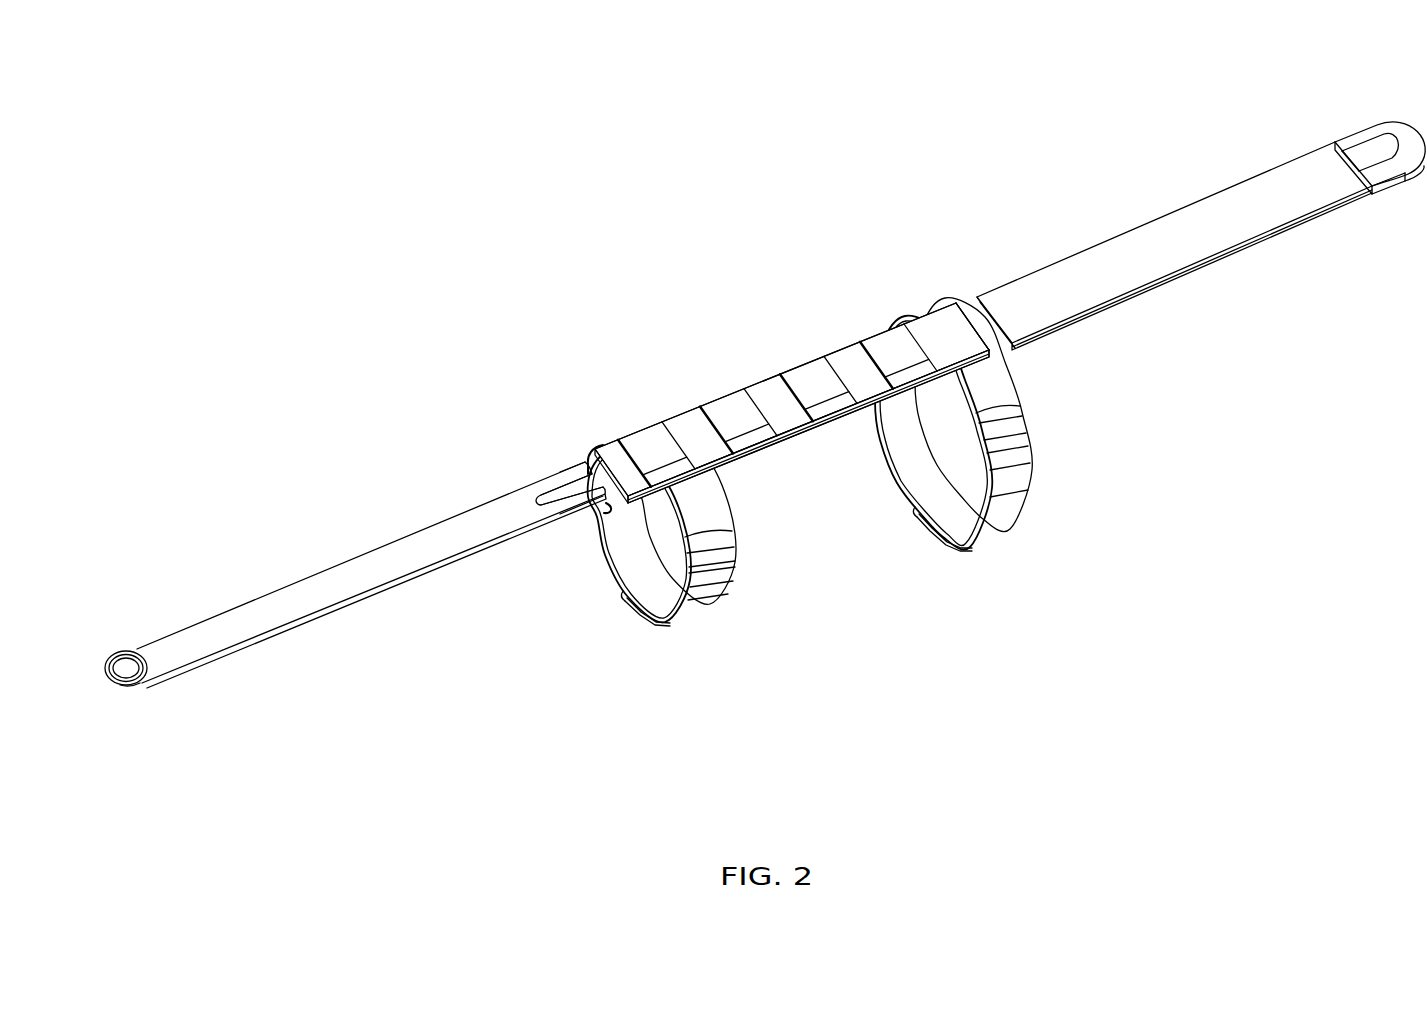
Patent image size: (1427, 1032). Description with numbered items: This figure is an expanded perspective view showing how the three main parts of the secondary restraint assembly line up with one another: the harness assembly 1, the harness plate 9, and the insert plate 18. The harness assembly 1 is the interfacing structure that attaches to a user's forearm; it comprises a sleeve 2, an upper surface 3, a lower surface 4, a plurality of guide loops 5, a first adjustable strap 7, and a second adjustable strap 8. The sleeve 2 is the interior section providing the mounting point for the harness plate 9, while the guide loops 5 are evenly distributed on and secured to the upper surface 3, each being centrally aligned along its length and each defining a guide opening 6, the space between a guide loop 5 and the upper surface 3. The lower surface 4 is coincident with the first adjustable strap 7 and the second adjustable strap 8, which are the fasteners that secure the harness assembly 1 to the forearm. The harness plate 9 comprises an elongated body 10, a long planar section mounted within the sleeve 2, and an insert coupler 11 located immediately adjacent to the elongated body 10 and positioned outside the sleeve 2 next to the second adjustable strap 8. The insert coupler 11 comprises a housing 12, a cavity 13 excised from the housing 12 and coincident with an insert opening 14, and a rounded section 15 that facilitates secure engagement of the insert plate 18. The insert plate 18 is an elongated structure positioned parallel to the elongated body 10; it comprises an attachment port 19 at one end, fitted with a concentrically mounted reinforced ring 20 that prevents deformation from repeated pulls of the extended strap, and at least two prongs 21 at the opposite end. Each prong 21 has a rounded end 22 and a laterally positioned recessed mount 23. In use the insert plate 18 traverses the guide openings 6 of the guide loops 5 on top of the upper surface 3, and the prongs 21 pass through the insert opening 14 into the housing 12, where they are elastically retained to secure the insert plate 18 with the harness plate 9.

The harness assembly 1 is at (782, 369).
The sleeve 2 is at (965, 286).
The upper surface 3 is at (775, 383).
The lower surface 4 is at (818, 420).
The guide loop 5 is at (645, 437).
The guide opening 6 is at (635, 462).
The first adjustable strap 7 is at (720, 595).
The second adjustable strap 8 is at (1032, 515).
The harness plate 9 is at (1202, 202).
The elongated body 10 is at (1092, 248).
The insert coupler 11 is at (1361, 150).
The housing 12 is at (1375, 195).
The cavity 13 is at (1384, 140).
The insert opening 14 is at (1340, 174).
The rounded section 15 is at (1410, 184).
The insert plate 18 is at (355, 545).
The attachment port 19 is at (132, 652).
The reinforced ring 20 is at (150, 673).
The prong 21 is at (546, 469).
The rounded end 22 is at (590, 455).
The recessed mount 23 is at (560, 462).